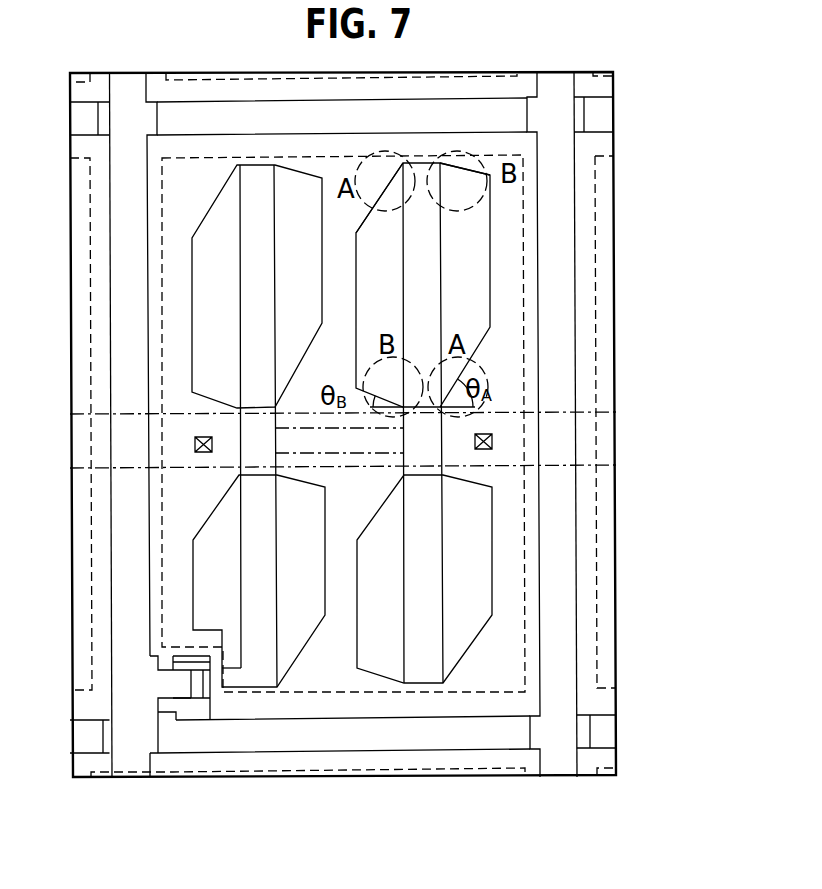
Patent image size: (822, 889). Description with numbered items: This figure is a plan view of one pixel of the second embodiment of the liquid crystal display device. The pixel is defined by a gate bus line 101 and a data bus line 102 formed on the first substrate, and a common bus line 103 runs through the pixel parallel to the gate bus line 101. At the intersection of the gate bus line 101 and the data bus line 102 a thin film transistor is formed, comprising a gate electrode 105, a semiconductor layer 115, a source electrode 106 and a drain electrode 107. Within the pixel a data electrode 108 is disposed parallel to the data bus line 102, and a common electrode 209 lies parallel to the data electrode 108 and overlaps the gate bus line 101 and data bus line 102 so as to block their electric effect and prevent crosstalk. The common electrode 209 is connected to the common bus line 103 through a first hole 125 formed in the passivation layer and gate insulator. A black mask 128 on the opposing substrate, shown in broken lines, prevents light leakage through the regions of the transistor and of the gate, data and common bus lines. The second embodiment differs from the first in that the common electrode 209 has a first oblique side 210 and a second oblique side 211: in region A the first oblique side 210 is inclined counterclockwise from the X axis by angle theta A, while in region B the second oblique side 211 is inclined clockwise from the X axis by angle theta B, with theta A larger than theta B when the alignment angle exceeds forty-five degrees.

The gate bus line 101 is at (605, 732).
The data bus line 102 is at (558, 760).
The common bus line 103 is at (583, 438).
The gate electrode 105 is at (192, 713).
The source electrode 106 is at (167, 683).
The drain electrode 107 is at (203, 687).
The data electrode 108 is at (420, 673).
The semiconductor layer 115 is at (190, 665).
The first hole 125 is at (195, 441).
The black mask 128 is at (597, 638).
The common electrode 209 is at (317, 703).
The first oblique side 210 is at (388, 206).
The second oblique side 211 is at (467, 178).